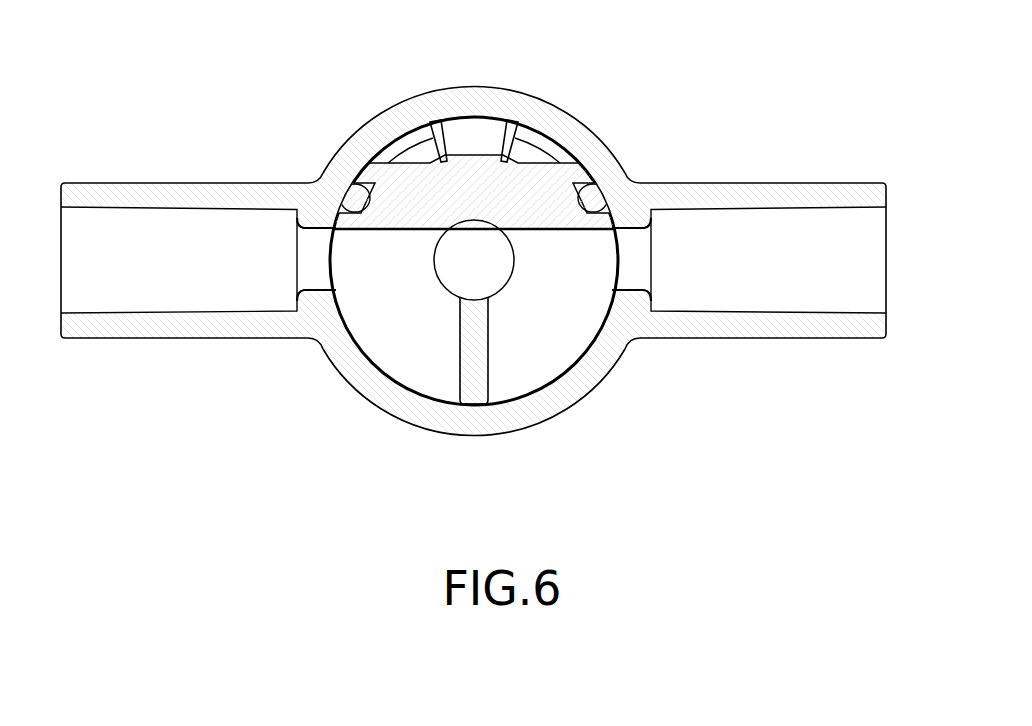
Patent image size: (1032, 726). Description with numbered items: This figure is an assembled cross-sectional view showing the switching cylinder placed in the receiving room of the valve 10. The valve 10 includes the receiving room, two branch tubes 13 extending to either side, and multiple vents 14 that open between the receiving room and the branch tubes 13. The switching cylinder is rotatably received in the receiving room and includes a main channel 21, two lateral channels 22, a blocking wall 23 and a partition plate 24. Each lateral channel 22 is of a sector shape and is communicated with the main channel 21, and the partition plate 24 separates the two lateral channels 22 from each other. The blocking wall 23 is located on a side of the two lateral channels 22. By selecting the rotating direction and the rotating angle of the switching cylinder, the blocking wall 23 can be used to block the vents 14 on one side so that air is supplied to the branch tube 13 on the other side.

The valve 10 is at (276, 178).
The branch tube 13 is at (150, 198).
The vent 14 is at (311, 262).
The main channel 21 is at (473, 250).
The lateral channel 22 is at (397, 348).
The blocking wall 23 is at (533, 187).
The partition plate 24 is at (477, 360).